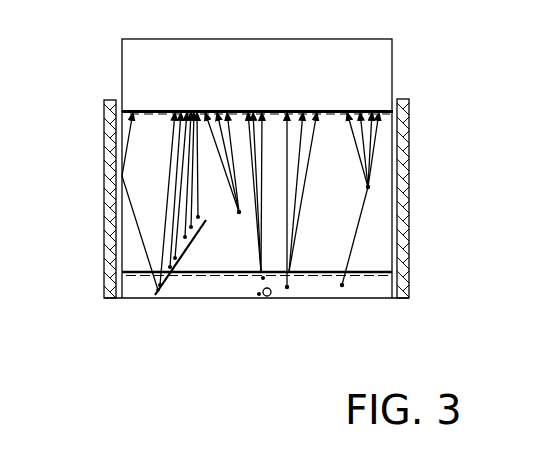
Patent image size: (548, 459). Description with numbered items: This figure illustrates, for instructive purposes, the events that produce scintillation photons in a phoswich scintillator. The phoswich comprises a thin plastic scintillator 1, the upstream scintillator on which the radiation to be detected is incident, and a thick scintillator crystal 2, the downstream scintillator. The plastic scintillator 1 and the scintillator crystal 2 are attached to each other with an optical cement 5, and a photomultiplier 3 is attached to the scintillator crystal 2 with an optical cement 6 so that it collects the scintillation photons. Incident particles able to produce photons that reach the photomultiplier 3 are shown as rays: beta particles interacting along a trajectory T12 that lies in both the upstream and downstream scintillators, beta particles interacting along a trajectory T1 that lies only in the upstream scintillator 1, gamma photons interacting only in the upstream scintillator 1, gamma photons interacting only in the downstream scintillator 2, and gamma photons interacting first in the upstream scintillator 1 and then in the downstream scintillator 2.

The plastic scintillator 1 is at (384, 286).
The scintillator crystal 2 is at (385, 207).
The photomultiplier 3 is at (132, 73).
The optical cement 5 is at (133, 272).
The optical cement 6 is at (384, 111).
The trajectory T12 is at (181, 258).
The trajectory T1 is at (267, 296).